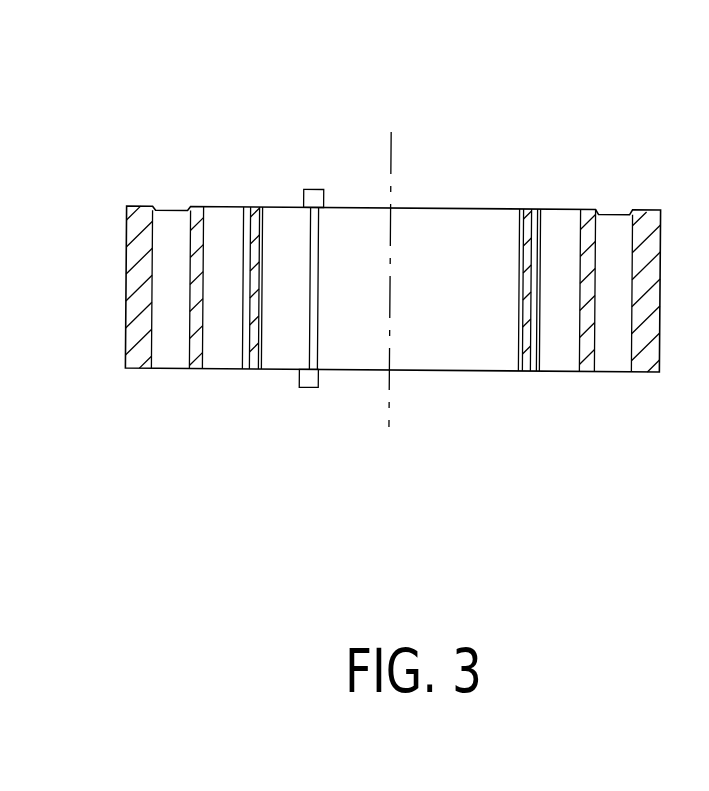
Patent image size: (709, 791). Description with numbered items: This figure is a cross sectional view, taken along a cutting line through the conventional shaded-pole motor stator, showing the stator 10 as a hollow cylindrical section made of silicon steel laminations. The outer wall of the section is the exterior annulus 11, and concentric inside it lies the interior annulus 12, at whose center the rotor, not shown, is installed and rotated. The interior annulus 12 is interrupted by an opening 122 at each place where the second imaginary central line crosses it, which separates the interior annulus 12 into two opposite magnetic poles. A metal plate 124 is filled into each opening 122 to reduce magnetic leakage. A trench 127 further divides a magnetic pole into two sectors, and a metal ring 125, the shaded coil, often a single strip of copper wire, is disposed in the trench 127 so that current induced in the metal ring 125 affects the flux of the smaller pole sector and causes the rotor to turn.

The stator 10 is at (446, 414).
The exterior annulus 11 is at (645, 212).
The interior annulus 12 is at (437, 227).
The opening 122 is at (247, 382).
The metal plate 124 is at (257, 206).
The metal ring 125 is at (309, 190).
The trench 127 is at (313, 386).